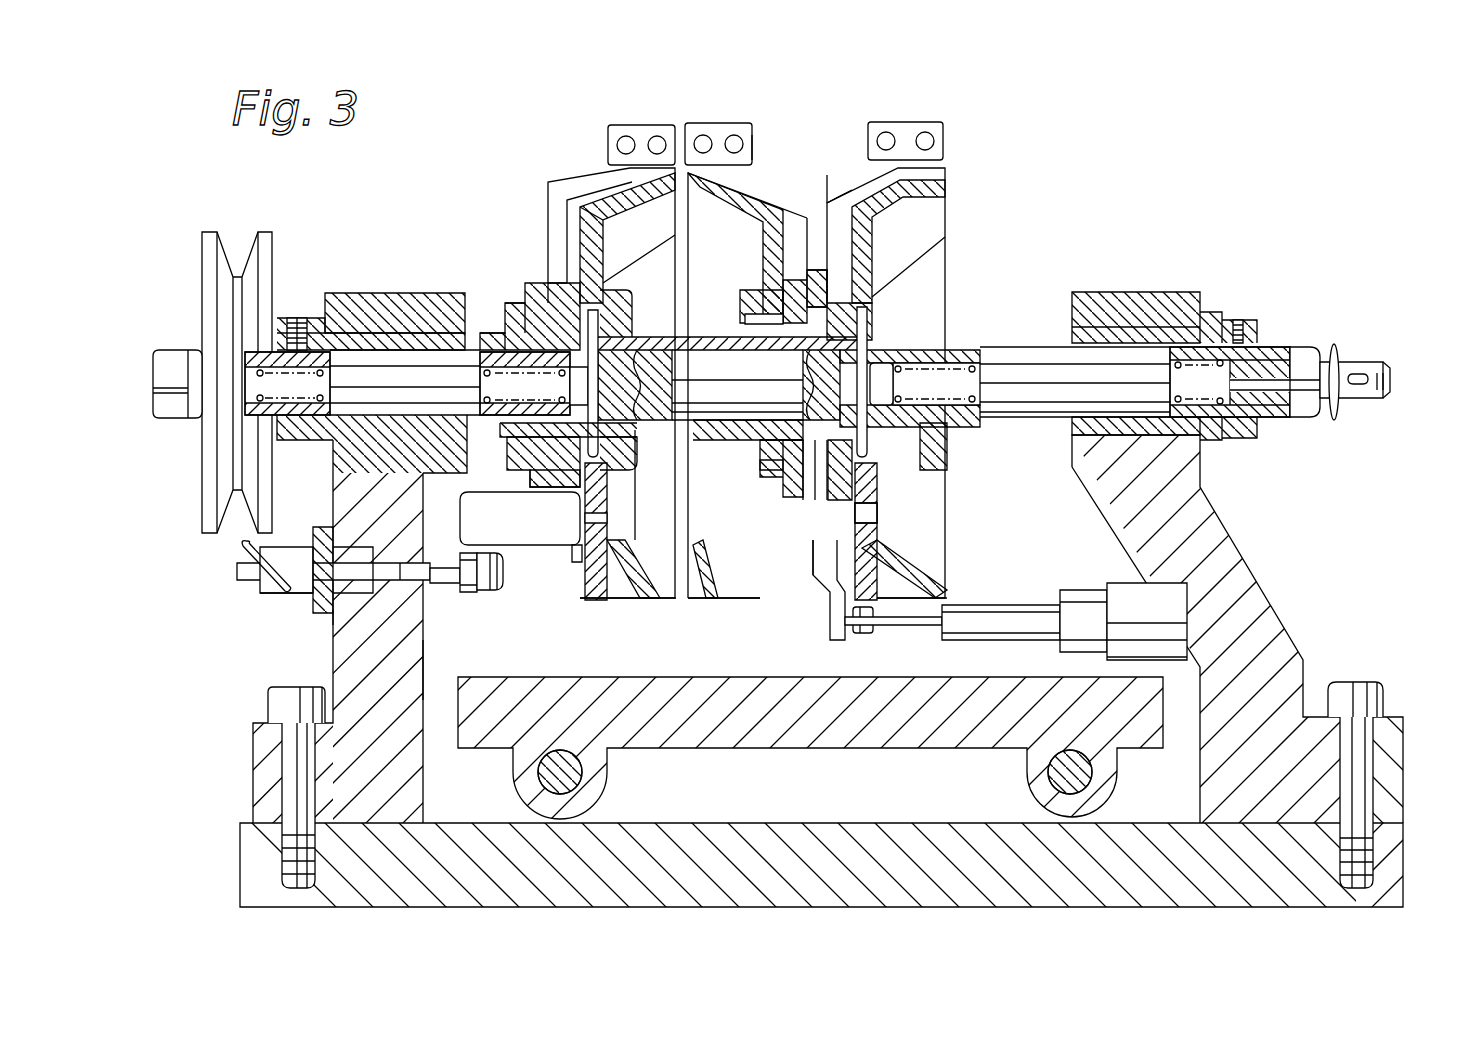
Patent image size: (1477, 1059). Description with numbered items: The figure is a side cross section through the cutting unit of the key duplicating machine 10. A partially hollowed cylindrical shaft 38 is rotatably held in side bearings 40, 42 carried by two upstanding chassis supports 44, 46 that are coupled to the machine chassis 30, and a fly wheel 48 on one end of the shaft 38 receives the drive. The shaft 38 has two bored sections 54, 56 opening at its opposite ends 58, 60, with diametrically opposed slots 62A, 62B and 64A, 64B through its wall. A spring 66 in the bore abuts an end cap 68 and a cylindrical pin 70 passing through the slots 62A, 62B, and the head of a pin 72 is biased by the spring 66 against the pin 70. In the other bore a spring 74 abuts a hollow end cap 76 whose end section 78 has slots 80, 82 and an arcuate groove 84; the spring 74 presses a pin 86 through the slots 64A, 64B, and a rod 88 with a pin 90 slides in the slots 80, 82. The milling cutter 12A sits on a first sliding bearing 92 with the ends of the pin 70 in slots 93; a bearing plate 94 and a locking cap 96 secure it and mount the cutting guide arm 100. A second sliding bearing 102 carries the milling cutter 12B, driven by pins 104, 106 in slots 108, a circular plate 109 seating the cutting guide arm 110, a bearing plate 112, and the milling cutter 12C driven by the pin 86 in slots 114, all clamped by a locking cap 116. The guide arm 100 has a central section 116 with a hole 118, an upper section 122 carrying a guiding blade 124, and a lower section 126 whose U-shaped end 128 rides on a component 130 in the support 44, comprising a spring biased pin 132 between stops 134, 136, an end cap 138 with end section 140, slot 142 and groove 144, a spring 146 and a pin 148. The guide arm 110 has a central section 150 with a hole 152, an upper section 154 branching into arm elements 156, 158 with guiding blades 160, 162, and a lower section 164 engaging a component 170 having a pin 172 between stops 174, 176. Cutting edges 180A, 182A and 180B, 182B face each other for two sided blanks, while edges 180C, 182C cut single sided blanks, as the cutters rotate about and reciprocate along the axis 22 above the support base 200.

The key duplicating machine 10 is at (1052, 163).
The milling cutter 12A is at (587, 177).
The milling cutter 12B is at (773, 187).
The milling cutter 12C is at (933, 195).
The axis 22 is at (1083, 348).
The machine chassis 30 is at (832, 822).
The shaft 38 is at (490, 343).
The side bearing 40 is at (378, 340).
The side bearing 42 is at (1135, 333).
The chassis support 44 is at (347, 662).
The chassis support 46 is at (1250, 597).
The fly wheel 48 is at (272, 245).
The bored section 54 is at (265, 365).
The bored section 56 is at (947, 323).
The end of shaft 58 is at (207, 478).
The end of shaft 60 is at (1270, 347).
The elongated slot 62A is at (510, 345).
The elongated slot 62B is at (508, 447).
The elongated slot 64A is at (920, 303).
The elongated slot 64B is at (905, 437).
The spring 66 is at (290, 433).
The end cap 68 is at (237, 413).
The pin 70 is at (640, 310).
The pin 72 is at (635, 437).
The spring 74 is at (895, 375).
The end cap 76 is at (1298, 405).
The end section 78 is at (1357, 362).
The slot 80 is at (1387, 362).
The slot 82 is at (1356, 385).
The arcuate groove 84 is at (1387, 390).
The pin 86 is at (920, 442).
The rod 88 is at (980, 395).
The pin 90 is at (1334, 345).
The sliding cylindrical bearing 92 is at (615, 470).
The slot 93 is at (605, 283).
The bearing plate 94 is at (577, 548).
The locking cap 96 is at (502, 343).
The cutting guide arm 100 is at (560, 183).
The sliding cylindrical bearing 102 is at (765, 487).
The pin 104 is at (757, 303).
The pin 106 is at (780, 448).
The slot 108 is at (770, 300).
The circular plate 109 is at (785, 525).
The cutting guide arm 110 is at (808, 185).
The bearing plate 112 is at (870, 503).
The slot 114 is at (866, 300).
The locking cap 116 is at (548, 270).
The hole 118 is at (535, 450).
The upper guide arm section 122 is at (583, 173).
The guiding blade 124 is at (645, 125).
The lower guide arm section 126 is at (537, 548).
The U-shaped end section 128 is at (470, 592).
The component 130 is at (398, 620).
The spring biased pin 132 is at (407, 580).
The stop 134 is at (493, 590).
The stop 136 is at (430, 560).
The end cap 138 is at (328, 613).
The end section 140 is at (272, 600).
The slot 142 is at (283, 550).
The arcuate groove 144 is at (258, 585).
The spring 146 is at (327, 618).
The pin 148 is at (240, 552).
The central section 150 is at (875, 528).
The hole 152 is at (808, 572).
The upper guide arm section 154 is at (838, 165).
The arm element 156 is at (752, 150).
The arm element 158 is at (846, 173).
The guiding blade 160 is at (722, 123).
The guiding blade 162 is at (907, 122).
The lower guide arm section 164 is at (850, 580).
The component 170 is at (1083, 612).
The pin 172 is at (897, 640).
The stop 174 is at (853, 617).
The stop 176 is at (1037, 612).
The cutting edge 180A is at (657, 597).
The cutting edge 180B is at (713, 603).
The cutting edge 180C is at (933, 595).
The cutting edge 182A is at (633, 568).
The cutting edge 182B is at (690, 598).
The cutting edge 182C is at (947, 562).
The support base 200 is at (686, 733).